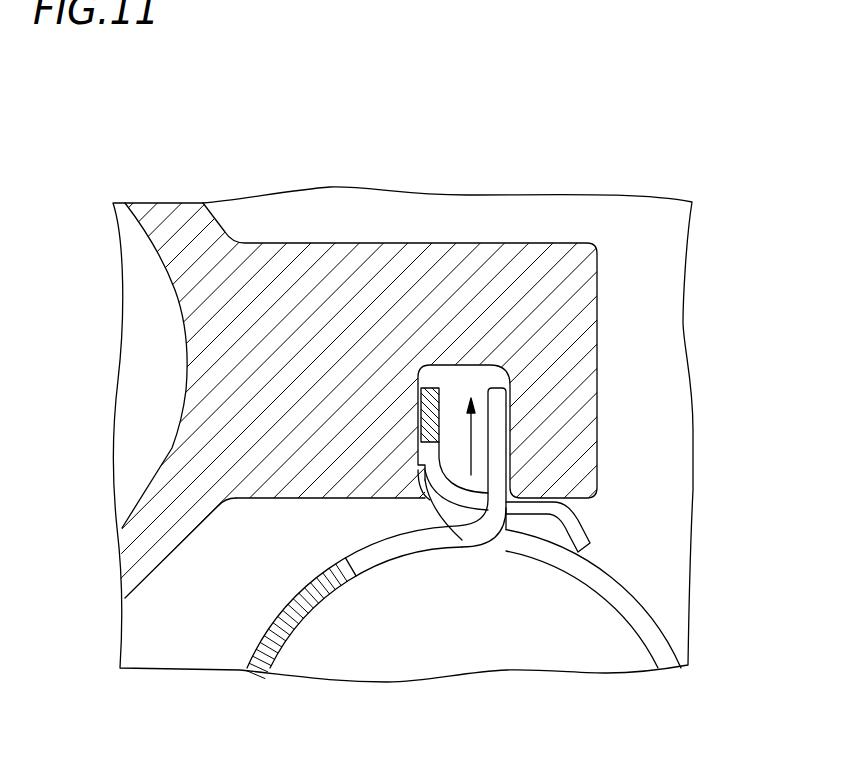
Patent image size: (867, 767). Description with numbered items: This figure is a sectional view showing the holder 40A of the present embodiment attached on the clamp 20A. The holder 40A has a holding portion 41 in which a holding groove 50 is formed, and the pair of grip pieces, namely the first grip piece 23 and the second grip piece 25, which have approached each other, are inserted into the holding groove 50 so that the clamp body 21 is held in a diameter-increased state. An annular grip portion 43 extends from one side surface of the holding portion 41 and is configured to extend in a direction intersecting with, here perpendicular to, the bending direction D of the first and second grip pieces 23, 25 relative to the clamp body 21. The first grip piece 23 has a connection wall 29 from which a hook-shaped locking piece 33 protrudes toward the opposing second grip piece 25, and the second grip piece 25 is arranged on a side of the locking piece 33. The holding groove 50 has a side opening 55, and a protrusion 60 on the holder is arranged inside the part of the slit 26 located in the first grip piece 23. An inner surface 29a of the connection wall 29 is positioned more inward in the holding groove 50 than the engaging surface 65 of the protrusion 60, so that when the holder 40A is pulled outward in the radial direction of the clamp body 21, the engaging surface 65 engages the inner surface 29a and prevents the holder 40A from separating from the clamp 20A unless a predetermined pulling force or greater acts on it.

The holder 40A is at (313, 241).
The holding portion 41 is at (470, 366).
The grip portion 43 is at (150, 565).
The connection wall 29 is at (441, 440).
The side opening 55 is at (493, 365).
The first grip piece 23 is at (428, 385).
The clamp 20A is at (644, 607).
The slit 26 is at (662, 643).
The clamp body 21 is at (258, 668).
The second grip piece 25 is at (490, 510).
The holding groove 50 is at (487, 378).
The inner surface 29a is at (440, 445).
The protrusion 60 is at (425, 470).
The engaging surface 65 is at (419, 472).
The locking piece 33 is at (580, 524).
The bending direction D is at (473, 432).